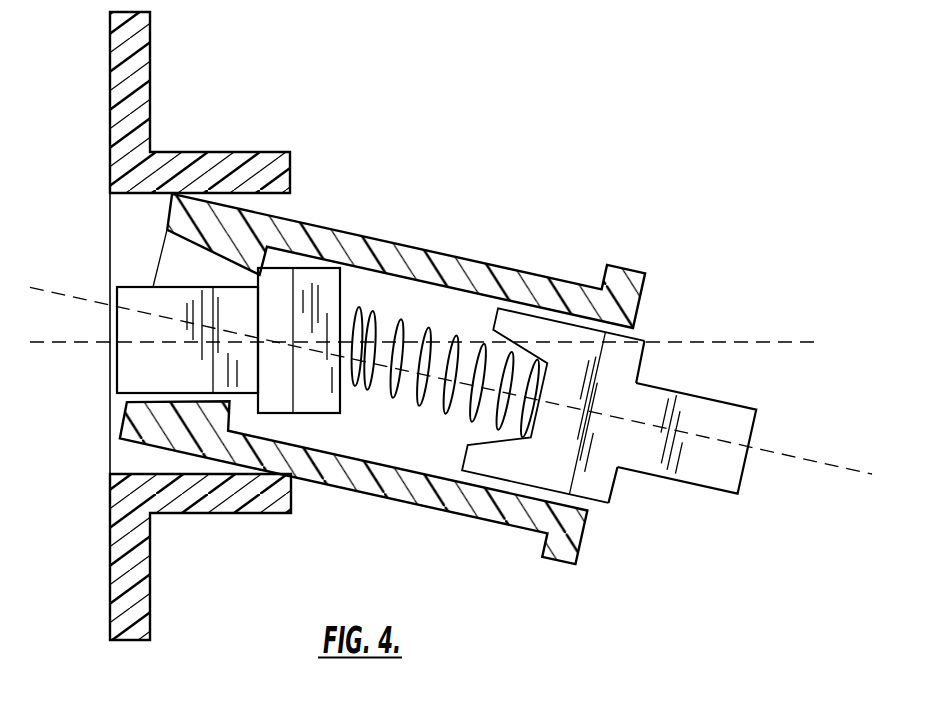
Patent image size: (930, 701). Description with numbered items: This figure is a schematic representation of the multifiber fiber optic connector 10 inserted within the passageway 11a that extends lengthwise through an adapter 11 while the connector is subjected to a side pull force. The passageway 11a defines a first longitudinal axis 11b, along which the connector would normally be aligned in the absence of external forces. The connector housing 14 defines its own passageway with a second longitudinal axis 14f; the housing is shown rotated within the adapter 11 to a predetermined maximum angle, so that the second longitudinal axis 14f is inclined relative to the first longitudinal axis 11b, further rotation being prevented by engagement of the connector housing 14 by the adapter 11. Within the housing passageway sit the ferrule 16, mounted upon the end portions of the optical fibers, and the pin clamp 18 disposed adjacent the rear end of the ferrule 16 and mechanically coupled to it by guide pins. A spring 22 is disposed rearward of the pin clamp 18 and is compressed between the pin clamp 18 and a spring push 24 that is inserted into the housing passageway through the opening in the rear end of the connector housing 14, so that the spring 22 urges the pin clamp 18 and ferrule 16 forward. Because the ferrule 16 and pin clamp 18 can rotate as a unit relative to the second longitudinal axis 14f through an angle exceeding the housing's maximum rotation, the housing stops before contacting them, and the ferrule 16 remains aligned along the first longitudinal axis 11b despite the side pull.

The fiber optic connector 10 is at (514, 245).
The adapter 11 is at (138, 93).
The passageway 11a is at (277, 202).
The first longitudinal axis 11b is at (698, 340).
The connector housing 14 is at (642, 298).
The second longitudinal axis 14f is at (769, 458).
The ferrule 16 is at (130, 378).
The pin clamp 18 is at (325, 282).
The spring 22 is at (452, 398).
The spring push 24 is at (733, 417).